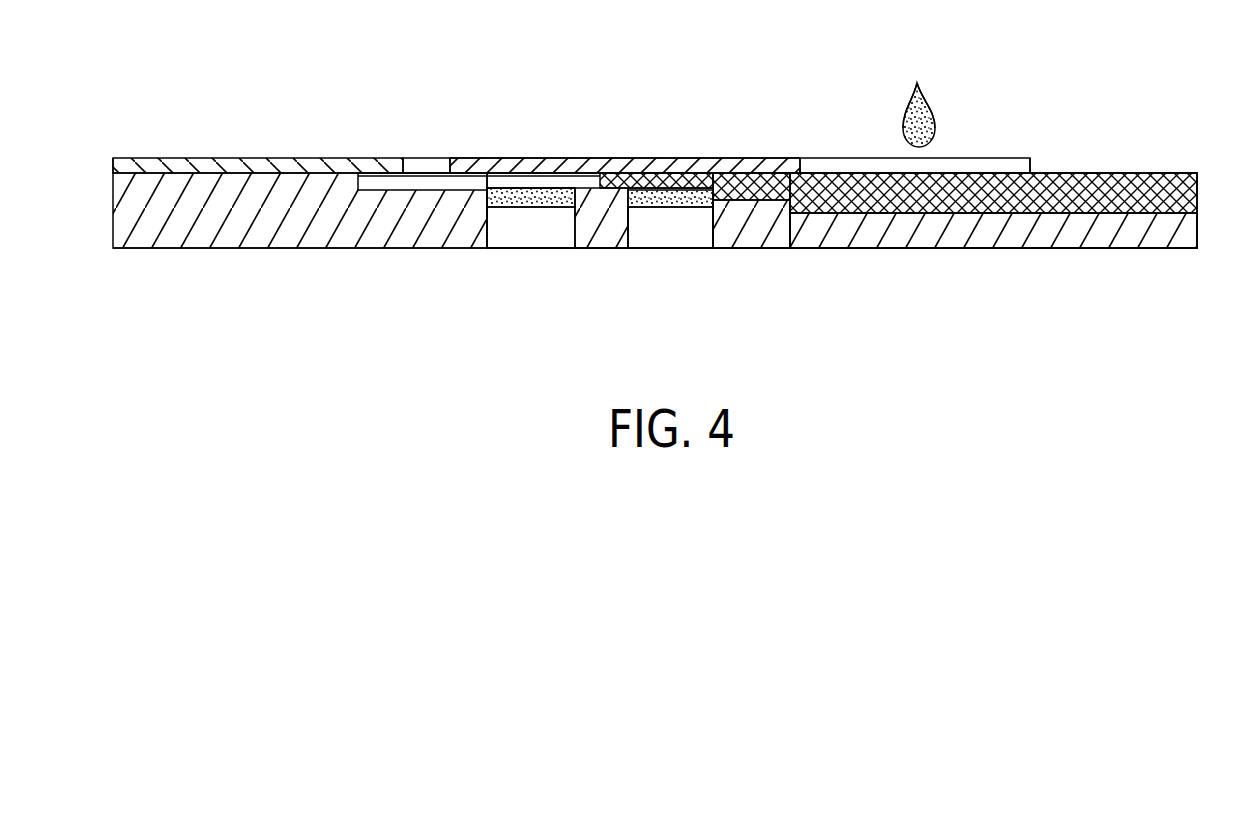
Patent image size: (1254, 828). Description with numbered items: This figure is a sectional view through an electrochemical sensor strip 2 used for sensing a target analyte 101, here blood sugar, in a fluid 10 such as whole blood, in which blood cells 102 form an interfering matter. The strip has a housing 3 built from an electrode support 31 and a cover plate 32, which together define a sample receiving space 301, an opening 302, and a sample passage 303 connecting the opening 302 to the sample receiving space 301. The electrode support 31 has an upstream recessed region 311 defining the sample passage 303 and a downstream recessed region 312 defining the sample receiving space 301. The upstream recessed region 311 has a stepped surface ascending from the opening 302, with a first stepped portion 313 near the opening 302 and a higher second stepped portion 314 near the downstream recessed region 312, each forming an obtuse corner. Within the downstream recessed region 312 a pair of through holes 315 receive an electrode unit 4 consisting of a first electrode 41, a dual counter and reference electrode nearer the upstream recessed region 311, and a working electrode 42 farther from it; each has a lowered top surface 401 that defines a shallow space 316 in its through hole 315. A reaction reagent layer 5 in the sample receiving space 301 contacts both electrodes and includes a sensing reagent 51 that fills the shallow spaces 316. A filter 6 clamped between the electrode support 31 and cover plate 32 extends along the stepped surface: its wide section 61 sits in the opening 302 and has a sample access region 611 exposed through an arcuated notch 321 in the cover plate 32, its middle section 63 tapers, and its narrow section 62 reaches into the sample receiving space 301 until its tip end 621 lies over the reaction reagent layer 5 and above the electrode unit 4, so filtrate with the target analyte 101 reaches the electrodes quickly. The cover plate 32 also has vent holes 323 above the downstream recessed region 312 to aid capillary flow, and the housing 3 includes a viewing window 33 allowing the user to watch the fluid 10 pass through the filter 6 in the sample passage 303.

The electrochemical sensor strip 2 is at (758, 148).
The housing 3 is at (108, 161).
The electrode unit 4 is at (707, 260).
The reaction reagent layer 5 is at (503, 160).
The filter 6 is at (1152, 160).
The fluid 10 is at (932, 102).
The electrode support 31 is at (113, 215).
The cover plate 32 is at (195, 158).
The viewing window 33 is at (700, 160).
The first electrode 41 is at (673, 242).
The working electrode 42 is at (535, 218).
The sensing reagent 51 is at (463, 160).
The wide section 61 is at (1195, 172).
The narrow section 62 is at (642, 160).
The middle section 63 is at (732, 160).
The target analyte 101 is at (905, 115).
The blood cells 102 is at (925, 95).
The sample receiving space 301 is at (545, 160).
The opening 302 is at (1032, 163).
The sample passage 303 is at (820, 160).
The upstream recessed region 311 is at (928, 213).
The downstream recessed region 312 is at (412, 195).
The first stepped portion 313 is at (790, 217).
The second stepped portion 314 is at (740, 232).
The through holes 315 is at (485, 248).
The shallow spaces 316 is at (525, 160).
The arcuated notch 321 is at (808, 160).
The vent holes 323 is at (425, 160).
The lowered top surface 401 is at (487, 160).
The sample access region 611 is at (1010, 158).
The tip end 621 is at (603, 160).